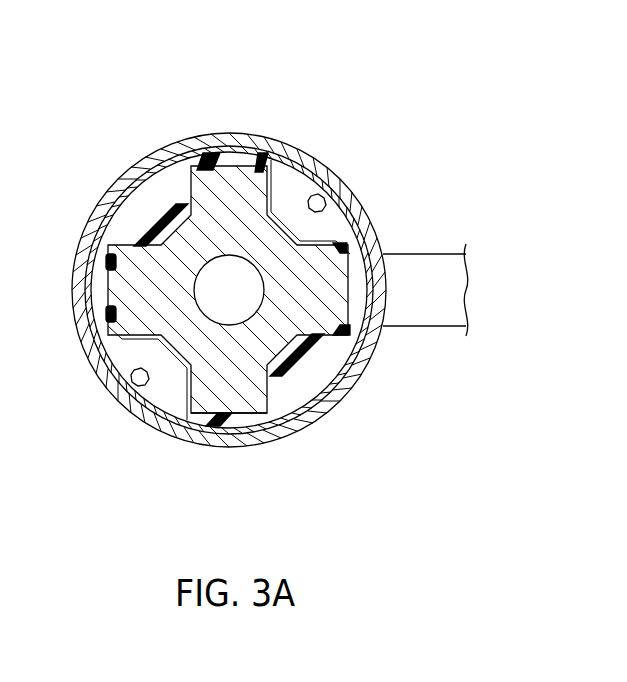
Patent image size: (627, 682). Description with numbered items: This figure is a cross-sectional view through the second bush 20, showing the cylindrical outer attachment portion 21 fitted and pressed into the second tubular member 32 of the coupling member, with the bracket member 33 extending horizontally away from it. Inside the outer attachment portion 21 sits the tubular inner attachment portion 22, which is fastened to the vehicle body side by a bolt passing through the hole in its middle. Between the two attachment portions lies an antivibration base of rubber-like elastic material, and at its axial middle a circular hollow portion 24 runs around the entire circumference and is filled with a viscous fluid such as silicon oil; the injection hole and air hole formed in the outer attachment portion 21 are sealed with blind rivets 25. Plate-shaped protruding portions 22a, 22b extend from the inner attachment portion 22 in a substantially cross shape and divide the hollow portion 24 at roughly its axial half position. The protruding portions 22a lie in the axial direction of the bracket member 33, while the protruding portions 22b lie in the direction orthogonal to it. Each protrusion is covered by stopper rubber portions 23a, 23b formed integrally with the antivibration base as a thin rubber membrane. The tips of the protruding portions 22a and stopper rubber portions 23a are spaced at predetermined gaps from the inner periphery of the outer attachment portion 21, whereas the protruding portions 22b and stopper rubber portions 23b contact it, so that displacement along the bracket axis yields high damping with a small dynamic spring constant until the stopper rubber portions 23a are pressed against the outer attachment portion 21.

The second bush 20 is at (378, 97).
The outer attachment portion 21 is at (165, 433).
The inner attachment portion 22 is at (193, 322).
The protruding portions 22a is at (330, 318).
The protruding portions 22b is at (232, 396).
The stopper rubber portions 23a is at (347, 260).
The stopper rubber portions 23b is at (237, 420).
The hollow portion 24 is at (285, 200).
The blind rivets 25 is at (318, 202).
The second tubular member 32 is at (140, 172).
The bracket member 33 is at (428, 317).